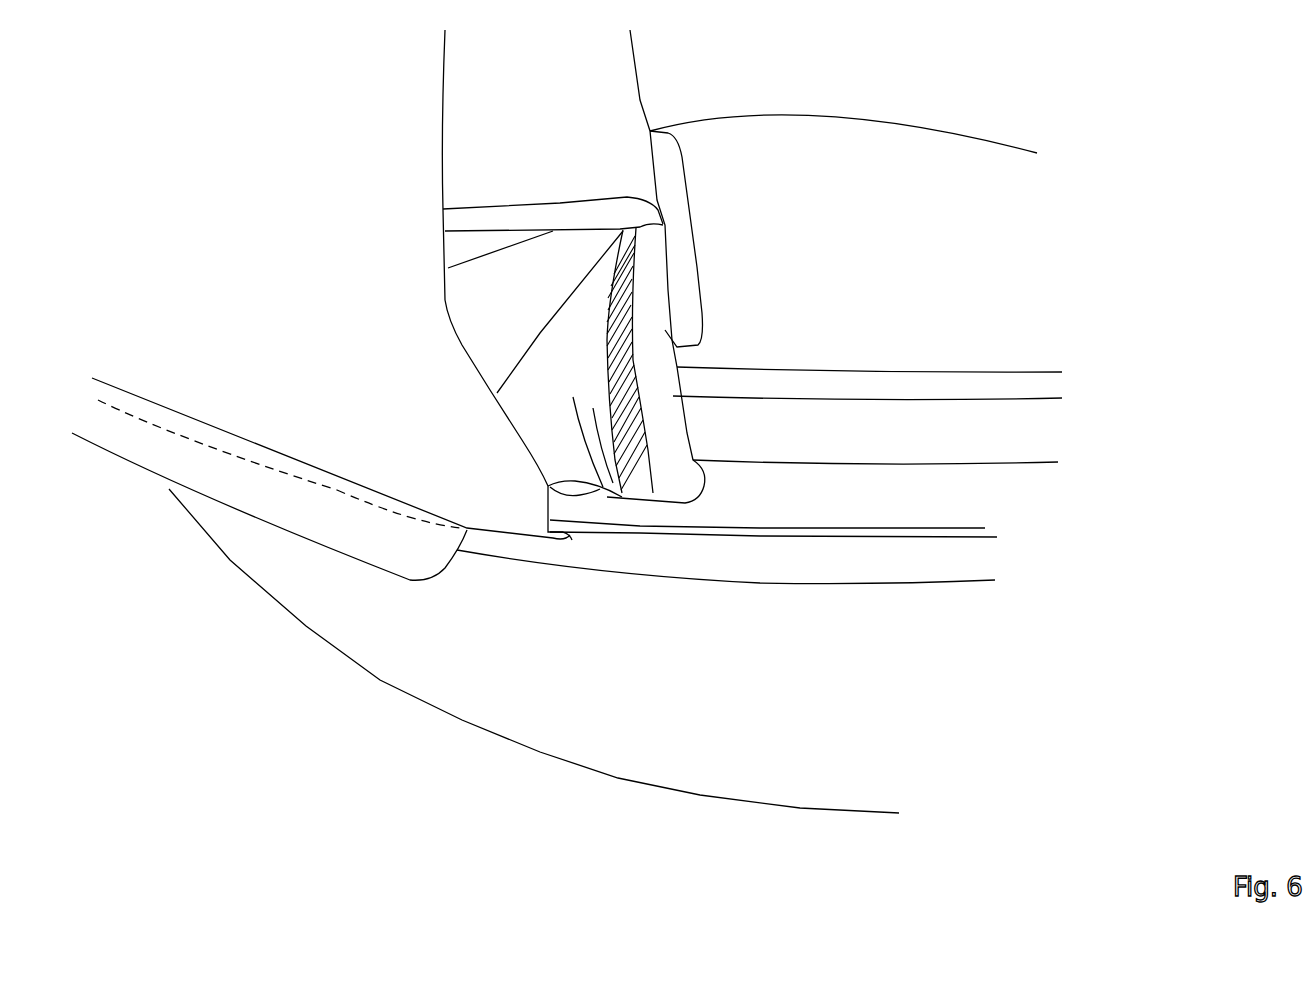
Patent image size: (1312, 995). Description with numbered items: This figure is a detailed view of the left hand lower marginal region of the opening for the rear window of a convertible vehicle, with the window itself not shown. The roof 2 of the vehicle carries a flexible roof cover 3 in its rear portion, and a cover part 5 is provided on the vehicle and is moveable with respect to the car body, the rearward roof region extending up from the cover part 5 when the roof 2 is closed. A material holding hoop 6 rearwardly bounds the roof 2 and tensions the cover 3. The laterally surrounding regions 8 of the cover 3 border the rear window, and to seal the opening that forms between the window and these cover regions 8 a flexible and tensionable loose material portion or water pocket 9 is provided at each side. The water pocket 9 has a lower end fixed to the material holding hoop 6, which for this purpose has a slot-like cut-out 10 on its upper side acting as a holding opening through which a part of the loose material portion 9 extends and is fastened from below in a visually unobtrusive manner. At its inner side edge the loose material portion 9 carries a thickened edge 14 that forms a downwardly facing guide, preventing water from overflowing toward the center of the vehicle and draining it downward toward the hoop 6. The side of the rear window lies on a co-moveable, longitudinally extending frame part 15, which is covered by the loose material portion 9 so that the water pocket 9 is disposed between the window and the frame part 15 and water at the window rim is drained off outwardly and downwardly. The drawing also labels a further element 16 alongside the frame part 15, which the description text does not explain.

The roof 2 is at (348, 123).
The flexible roof cover 3 is at (292, 367).
The cover part 5 is at (480, 677).
The material holding hoop 6 is at (770, 488).
The laterally surrounding regions of the cover 8 is at (410, 227).
The loose material portion (water pocket) 9 is at (592, 315).
The slot-like cut-out 10 is at (592, 492).
The thickened edge 14 is at (668, 408).
The frame part 15 is at (600, 67).
The guide channel 16 is at (645, 97).